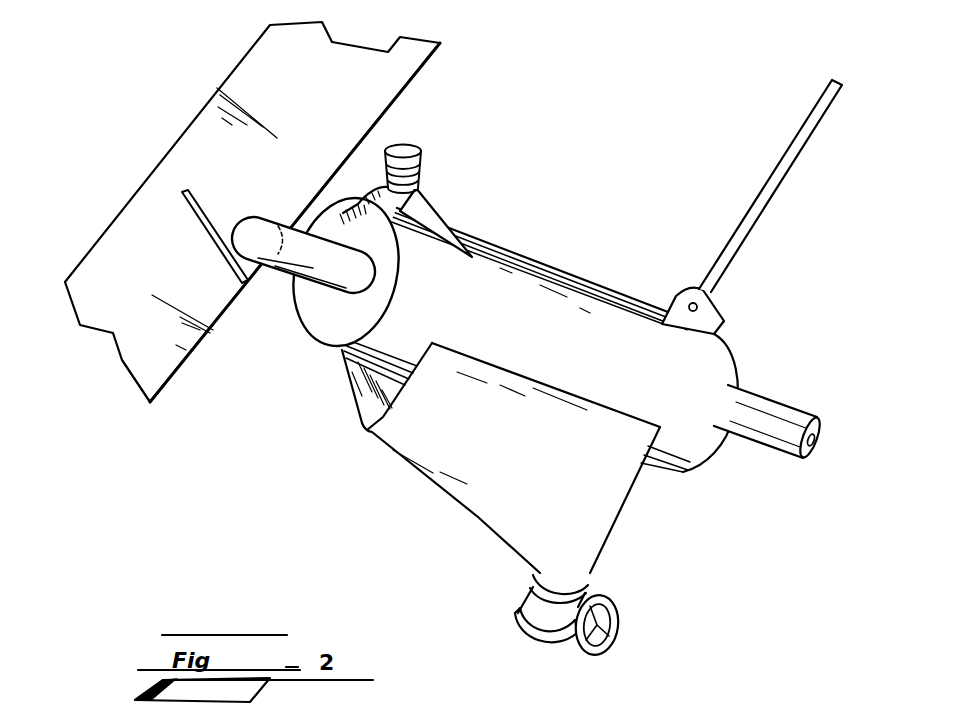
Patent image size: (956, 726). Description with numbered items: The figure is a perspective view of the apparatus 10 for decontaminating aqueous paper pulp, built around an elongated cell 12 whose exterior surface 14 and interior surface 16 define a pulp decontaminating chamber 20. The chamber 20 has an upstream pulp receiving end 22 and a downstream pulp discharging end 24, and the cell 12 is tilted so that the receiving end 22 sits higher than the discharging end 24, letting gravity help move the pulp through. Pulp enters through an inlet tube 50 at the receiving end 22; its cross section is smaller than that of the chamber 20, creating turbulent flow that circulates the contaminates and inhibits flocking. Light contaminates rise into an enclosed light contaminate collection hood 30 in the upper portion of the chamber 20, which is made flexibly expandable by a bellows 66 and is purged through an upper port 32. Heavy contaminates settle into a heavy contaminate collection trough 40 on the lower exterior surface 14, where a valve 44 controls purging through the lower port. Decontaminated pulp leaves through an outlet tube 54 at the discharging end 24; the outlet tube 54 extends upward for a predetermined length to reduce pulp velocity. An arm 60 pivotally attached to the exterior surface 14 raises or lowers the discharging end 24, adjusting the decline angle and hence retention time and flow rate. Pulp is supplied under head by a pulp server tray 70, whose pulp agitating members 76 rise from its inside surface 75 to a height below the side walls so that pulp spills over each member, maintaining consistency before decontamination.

The apparatus 10 is at (549, 57).
The cell 12 is at (527, 253).
The exterior surface 14 is at (567, 306).
The interior surface 16 is at (634, 302).
The pulp decontaminating chamber 20 is at (582, 277).
The upstream pulp receiving end 22 is at (325, 314).
The downstream pulp discharging end 24 is at (740, 365).
The light contaminate collection hood 30 is at (431, 208).
The upper port 32 is at (405, 157).
The heavy contaminate collection trough 40 is at (437, 488).
The valve 44 is at (537, 600).
The inlet tube 50 is at (298, 255).
The outlet tube 54 is at (750, 433).
The arm 60 is at (782, 160).
The bellows 66 is at (416, 189).
The pulp server tray 70 is at (332, 94).
The inside surface 75 is at (150, 352).
The pulp agitating member 76 is at (190, 207).